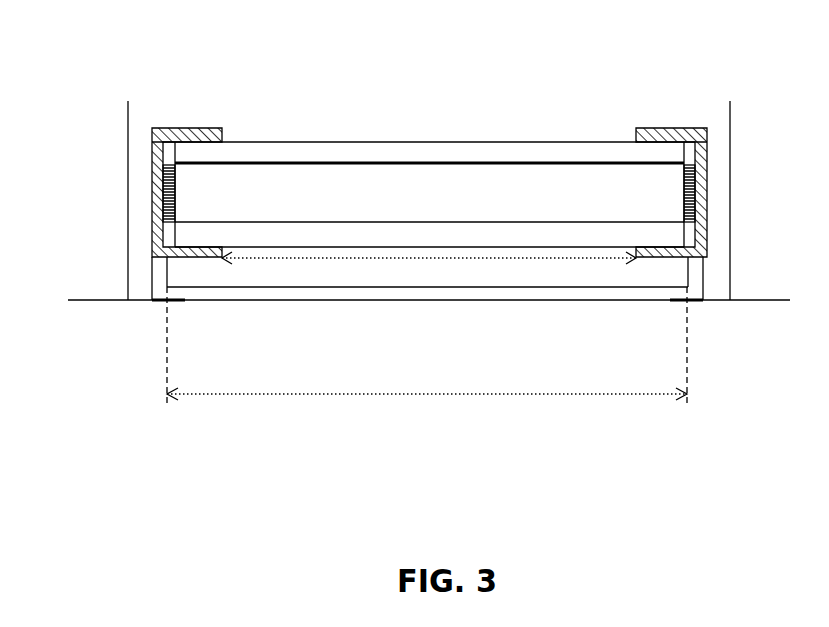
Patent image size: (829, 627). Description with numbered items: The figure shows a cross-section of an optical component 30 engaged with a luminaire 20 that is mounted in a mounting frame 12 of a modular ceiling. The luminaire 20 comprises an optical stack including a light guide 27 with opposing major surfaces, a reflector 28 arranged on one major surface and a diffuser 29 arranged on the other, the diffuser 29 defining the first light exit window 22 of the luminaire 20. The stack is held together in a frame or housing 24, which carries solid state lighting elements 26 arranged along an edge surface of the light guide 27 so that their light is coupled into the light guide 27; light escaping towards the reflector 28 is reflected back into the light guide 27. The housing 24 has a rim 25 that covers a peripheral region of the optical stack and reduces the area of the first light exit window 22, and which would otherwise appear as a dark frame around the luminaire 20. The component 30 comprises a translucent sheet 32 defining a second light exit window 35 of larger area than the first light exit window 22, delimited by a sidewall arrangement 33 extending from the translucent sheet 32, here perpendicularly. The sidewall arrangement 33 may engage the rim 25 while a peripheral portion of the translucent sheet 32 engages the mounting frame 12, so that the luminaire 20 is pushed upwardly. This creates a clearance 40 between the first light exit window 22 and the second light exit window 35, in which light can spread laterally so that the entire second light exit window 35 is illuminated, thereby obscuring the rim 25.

The mounting frame 12 is at (127, 245).
The luminaire 20 is at (378, 142).
The first light exit window 22 is at (480, 258).
The frame or housing 24 is at (152, 132).
The rim 25 is at (218, 248).
The solid state lighting elements 26 is at (165, 188).
The light guide 27 is at (433, 185).
The reflector 28 is at (575, 147).
The diffuser 29 is at (340, 235).
The optical component 30 is at (240, 293).
The translucent sheet 32 is at (513, 300).
The sidewall arrangement 33 is at (160, 275).
The second light exit window 35 is at (580, 392).
The clearance 40 is at (367, 278).